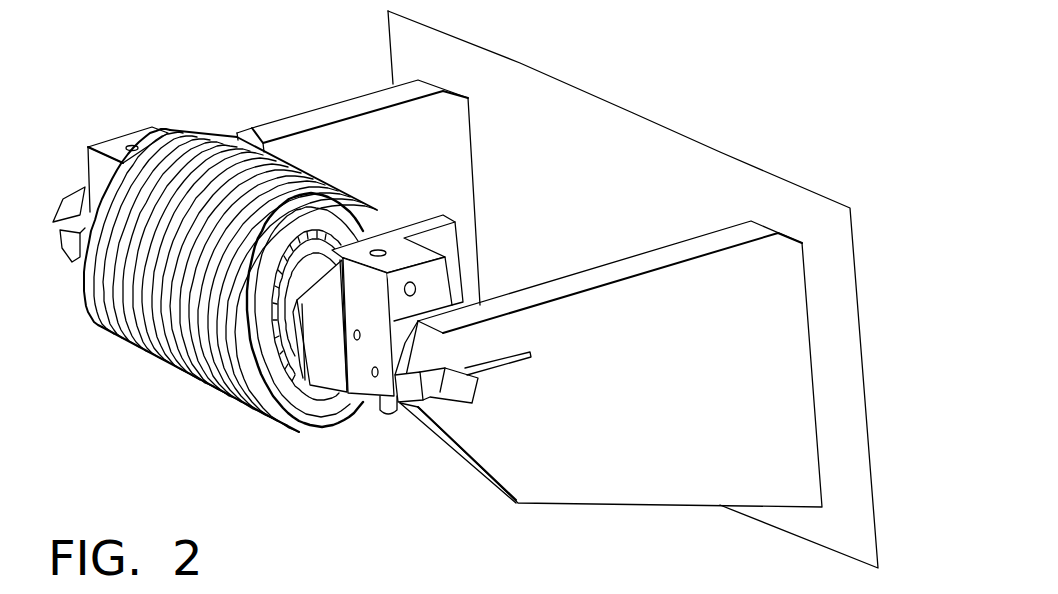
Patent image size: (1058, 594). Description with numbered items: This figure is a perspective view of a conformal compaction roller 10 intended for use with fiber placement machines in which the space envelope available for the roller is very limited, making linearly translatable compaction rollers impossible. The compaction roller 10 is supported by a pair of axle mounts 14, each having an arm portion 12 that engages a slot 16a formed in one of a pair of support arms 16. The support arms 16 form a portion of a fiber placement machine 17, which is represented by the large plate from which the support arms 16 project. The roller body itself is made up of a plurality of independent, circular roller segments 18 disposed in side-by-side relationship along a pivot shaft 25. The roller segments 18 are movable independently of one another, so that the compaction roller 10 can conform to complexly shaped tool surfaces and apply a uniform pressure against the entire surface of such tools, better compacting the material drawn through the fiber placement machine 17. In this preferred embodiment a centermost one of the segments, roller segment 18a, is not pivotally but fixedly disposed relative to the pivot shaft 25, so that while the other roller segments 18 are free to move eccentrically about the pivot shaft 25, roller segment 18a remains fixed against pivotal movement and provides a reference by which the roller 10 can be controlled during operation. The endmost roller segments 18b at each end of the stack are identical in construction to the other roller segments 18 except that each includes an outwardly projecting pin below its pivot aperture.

The conformal compaction roller 10 is at (207, 104).
The arm portion 12 is at (63, 213).
The axle mount 14 is at (304, 248).
The support arm 16 is at (422, 167).
The slot 16a is at (414, 362).
The fiber placement machine 17 is at (838, 530).
The roller segment 18 is at (223, 290).
The centermost roller segment 18a is at (173, 330).
The endmost roller segment 18b is at (90, 302).
The pivot shaft 25 is at (416, 288).